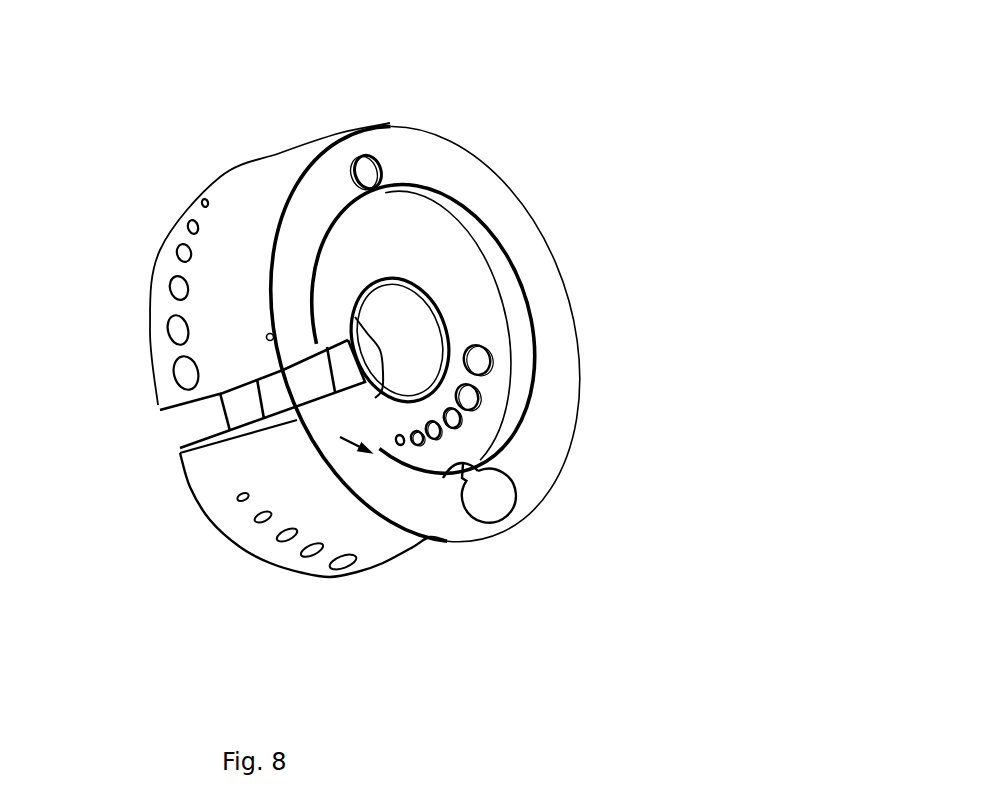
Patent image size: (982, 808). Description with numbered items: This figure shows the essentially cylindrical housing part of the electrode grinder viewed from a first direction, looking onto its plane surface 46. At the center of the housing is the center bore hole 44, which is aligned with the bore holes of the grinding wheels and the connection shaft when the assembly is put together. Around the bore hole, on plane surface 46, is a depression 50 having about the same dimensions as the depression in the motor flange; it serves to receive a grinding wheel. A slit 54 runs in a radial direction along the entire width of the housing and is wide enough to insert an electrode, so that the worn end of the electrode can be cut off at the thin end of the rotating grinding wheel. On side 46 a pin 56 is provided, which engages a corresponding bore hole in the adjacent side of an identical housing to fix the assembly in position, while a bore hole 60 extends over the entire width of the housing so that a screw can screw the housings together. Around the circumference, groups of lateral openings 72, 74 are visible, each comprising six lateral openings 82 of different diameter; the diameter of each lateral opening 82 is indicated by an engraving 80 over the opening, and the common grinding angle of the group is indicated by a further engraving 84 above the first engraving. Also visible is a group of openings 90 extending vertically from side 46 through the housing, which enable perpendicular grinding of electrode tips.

The center bore hole 44 is at (403, 229).
The plane surface 46 is at (428, 320).
The depression 50 is at (356, 268).
The slit 54 is at (194, 488).
The pin 56 is at (324, 111).
The bore hole 60 is at (551, 493).
The group of lateral openings 72 is at (216, 266).
The group of lateral openings 74 is at (301, 536).
The engraving 80 is at (254, 381).
The lateral opening 82 is at (133, 288).
The further engraving 84 is at (211, 387).
The group of openings 90 is at (531, 382).